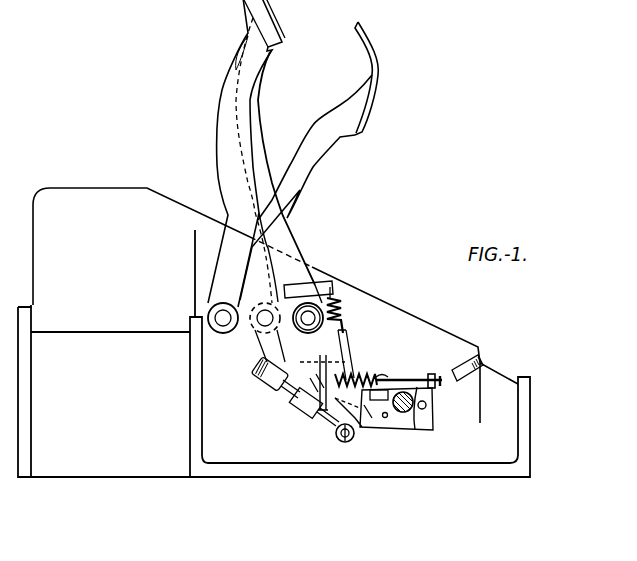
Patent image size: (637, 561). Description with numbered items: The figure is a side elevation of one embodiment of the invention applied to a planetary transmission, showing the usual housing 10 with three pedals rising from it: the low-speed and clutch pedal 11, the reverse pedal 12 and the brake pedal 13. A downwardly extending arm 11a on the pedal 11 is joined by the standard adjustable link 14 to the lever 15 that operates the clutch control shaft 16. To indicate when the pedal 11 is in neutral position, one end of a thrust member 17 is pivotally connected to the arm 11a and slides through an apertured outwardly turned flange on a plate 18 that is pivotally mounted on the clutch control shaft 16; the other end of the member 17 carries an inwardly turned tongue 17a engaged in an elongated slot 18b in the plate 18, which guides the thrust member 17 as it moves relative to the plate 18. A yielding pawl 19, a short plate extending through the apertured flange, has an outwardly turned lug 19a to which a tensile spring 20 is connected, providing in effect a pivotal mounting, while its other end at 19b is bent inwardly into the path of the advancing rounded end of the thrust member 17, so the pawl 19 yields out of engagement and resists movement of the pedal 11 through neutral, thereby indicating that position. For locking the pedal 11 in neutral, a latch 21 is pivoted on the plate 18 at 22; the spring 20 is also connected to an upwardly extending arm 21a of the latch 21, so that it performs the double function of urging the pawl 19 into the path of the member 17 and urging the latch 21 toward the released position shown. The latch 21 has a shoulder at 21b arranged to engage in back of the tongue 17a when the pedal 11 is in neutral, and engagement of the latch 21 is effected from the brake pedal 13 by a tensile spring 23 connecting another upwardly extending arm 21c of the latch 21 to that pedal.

The housing 10 is at (96, 198).
The low-speed and clutch pedal 11 is at (221, 101).
The downwardly extending arm 11a is at (268, 352).
The reverse pedal 12 is at (297, 188).
The brake pedal 13 is at (257, 147).
The adjustable link 14 is at (282, 406).
The lever 15 is at (453, 372).
The clutch control shaft 16 is at (408, 390).
The thrust member 17 is at (295, 378).
The inwardly turned tongue 17a is at (380, 375).
The plate 18 is at (421, 430).
The elongated slot 18b is at (391, 408).
The yielding pawl 19 is at (322, 412).
The outwardly turned lug 19a is at (313, 375).
The bent end of pawl 19b is at (368, 416).
The tensile spring 20 is at (348, 388).
The latch 21 is at (421, 418).
The upwardly extending arm 21a is at (432, 374).
The shoulder 21b is at (347, 442).
The upwardly extending arm 21c is at (348, 336).
The pivot 22 is at (427, 405).
The tensile spring 23 is at (341, 302).